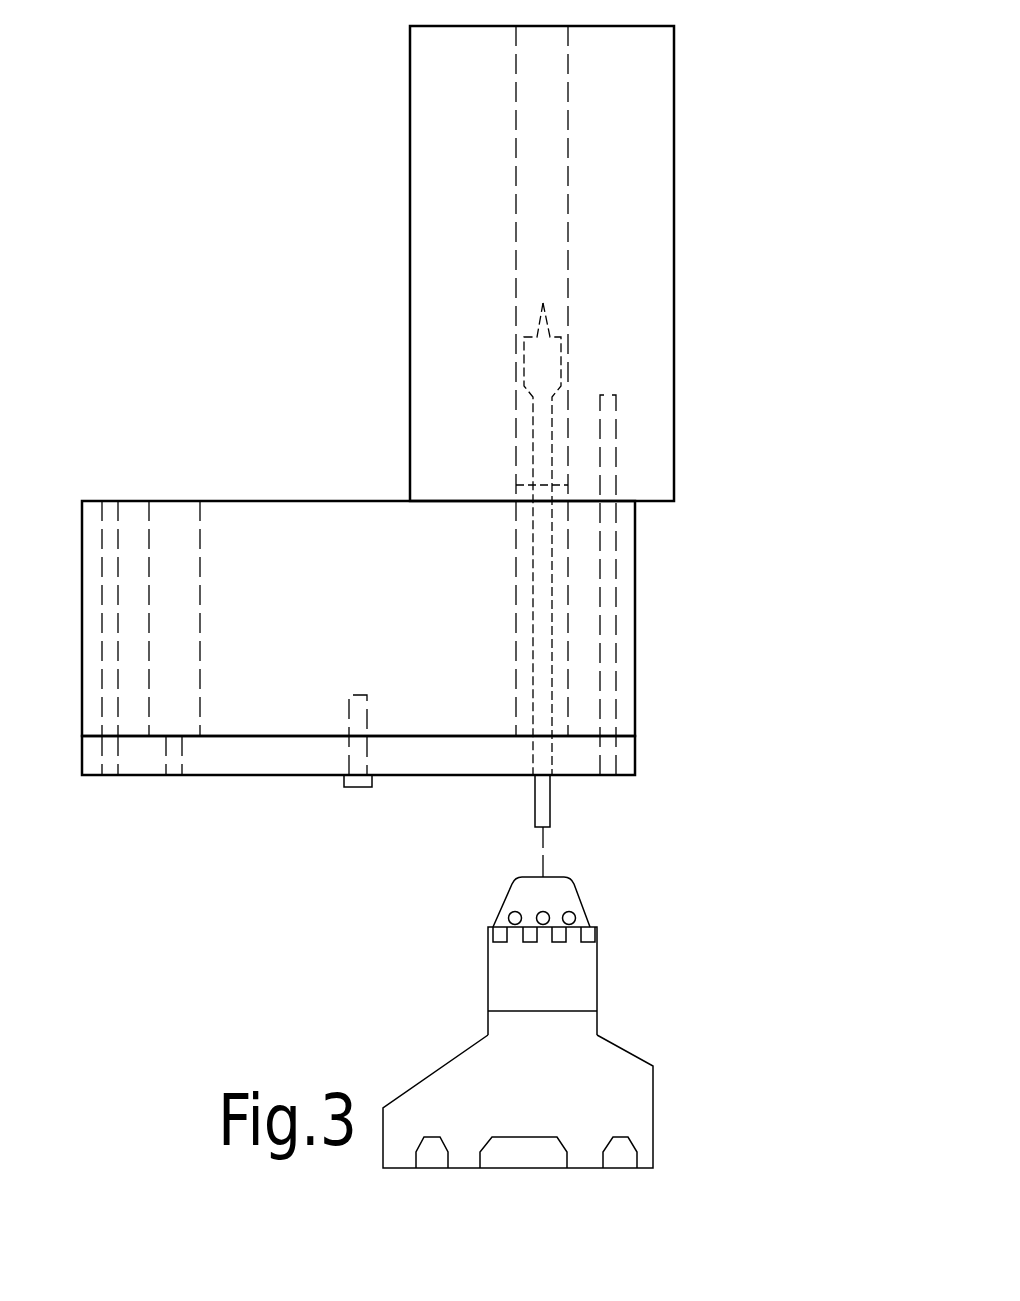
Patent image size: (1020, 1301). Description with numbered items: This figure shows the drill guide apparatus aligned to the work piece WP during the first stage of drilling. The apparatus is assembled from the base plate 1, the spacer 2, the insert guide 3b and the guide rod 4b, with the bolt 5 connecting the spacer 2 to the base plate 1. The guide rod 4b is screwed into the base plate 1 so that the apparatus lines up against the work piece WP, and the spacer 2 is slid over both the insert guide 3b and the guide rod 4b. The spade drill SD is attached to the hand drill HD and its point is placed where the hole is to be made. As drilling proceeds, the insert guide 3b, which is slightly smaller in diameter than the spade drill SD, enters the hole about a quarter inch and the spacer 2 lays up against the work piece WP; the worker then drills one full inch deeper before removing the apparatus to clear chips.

The work piece WP is at (475, 142).
The spade drill SD is at (560, 360).
The hand drill HD is at (626, 1048).
The base plate 1 is at (227, 775).
The spacer 2 is at (259, 501).
The insert guide 3b is at (525, 485).
The guide rod 4b is at (615, 447).
The bolt 5 is at (358, 788).